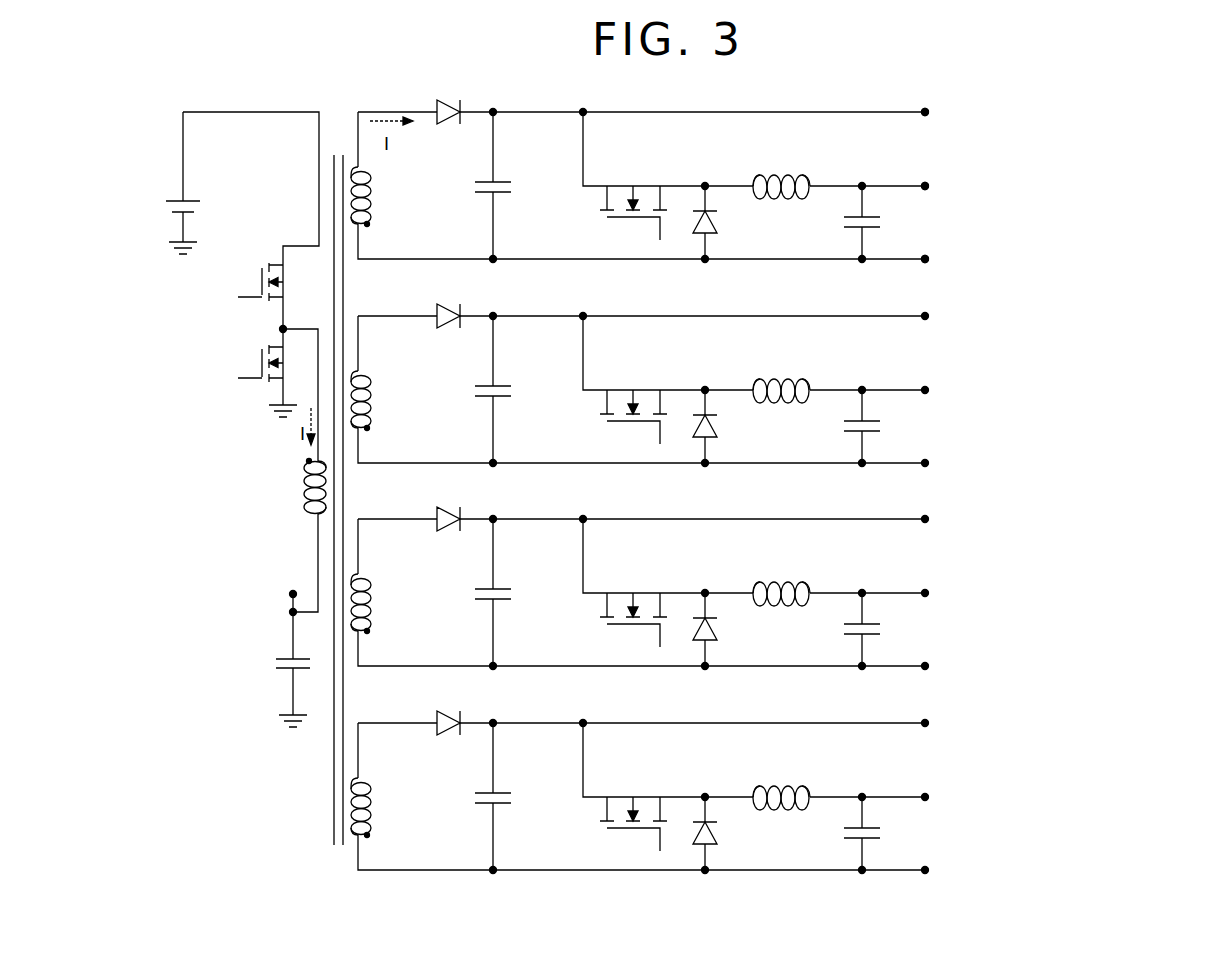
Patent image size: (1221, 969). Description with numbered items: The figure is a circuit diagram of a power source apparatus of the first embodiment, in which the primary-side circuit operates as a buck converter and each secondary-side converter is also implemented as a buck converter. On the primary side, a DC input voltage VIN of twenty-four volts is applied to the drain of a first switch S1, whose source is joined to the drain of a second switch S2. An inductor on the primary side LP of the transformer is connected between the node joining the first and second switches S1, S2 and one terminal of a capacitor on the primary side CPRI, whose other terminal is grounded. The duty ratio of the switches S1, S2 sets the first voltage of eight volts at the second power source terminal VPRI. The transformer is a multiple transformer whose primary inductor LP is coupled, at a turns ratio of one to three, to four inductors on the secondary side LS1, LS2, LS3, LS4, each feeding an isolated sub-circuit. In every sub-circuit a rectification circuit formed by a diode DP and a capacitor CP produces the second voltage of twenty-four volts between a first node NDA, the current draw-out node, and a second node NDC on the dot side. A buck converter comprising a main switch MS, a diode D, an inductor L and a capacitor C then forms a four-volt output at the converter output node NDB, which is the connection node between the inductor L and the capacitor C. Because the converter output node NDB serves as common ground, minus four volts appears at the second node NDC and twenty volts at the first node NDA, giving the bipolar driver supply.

The input voltage VIN is at (179, 183).
The first switch S1 is at (275, 282).
The second switch S2 is at (275, 363).
The inductor on the primary side LP is at (301, 487).
The second power source terminal VPRI is at (290, 578).
The capacitor on the primary side CPRI is at (270, 669).
The first inductor on the secondary side LS1 is at (380, 197).
The second inductor on the secondary side LS2 is at (380, 401).
The third inductor on the secondary side LS3 is at (380, 604).
The fourth inductor on the secondary side LS4 is at (380, 808).
The rectification diode DP is at (448, 435).
The rectification capacitor CP is at (500, 491).
The main switch MS is at (633, 505).
The diode D is at (715, 528).
The inductor L is at (781, 507).
The capacitor C is at (869, 528).
The first node NDA is at (1050, 113).
The converter output node NDB is at (1064, 187).
The second node NDC is at (1070, 260).